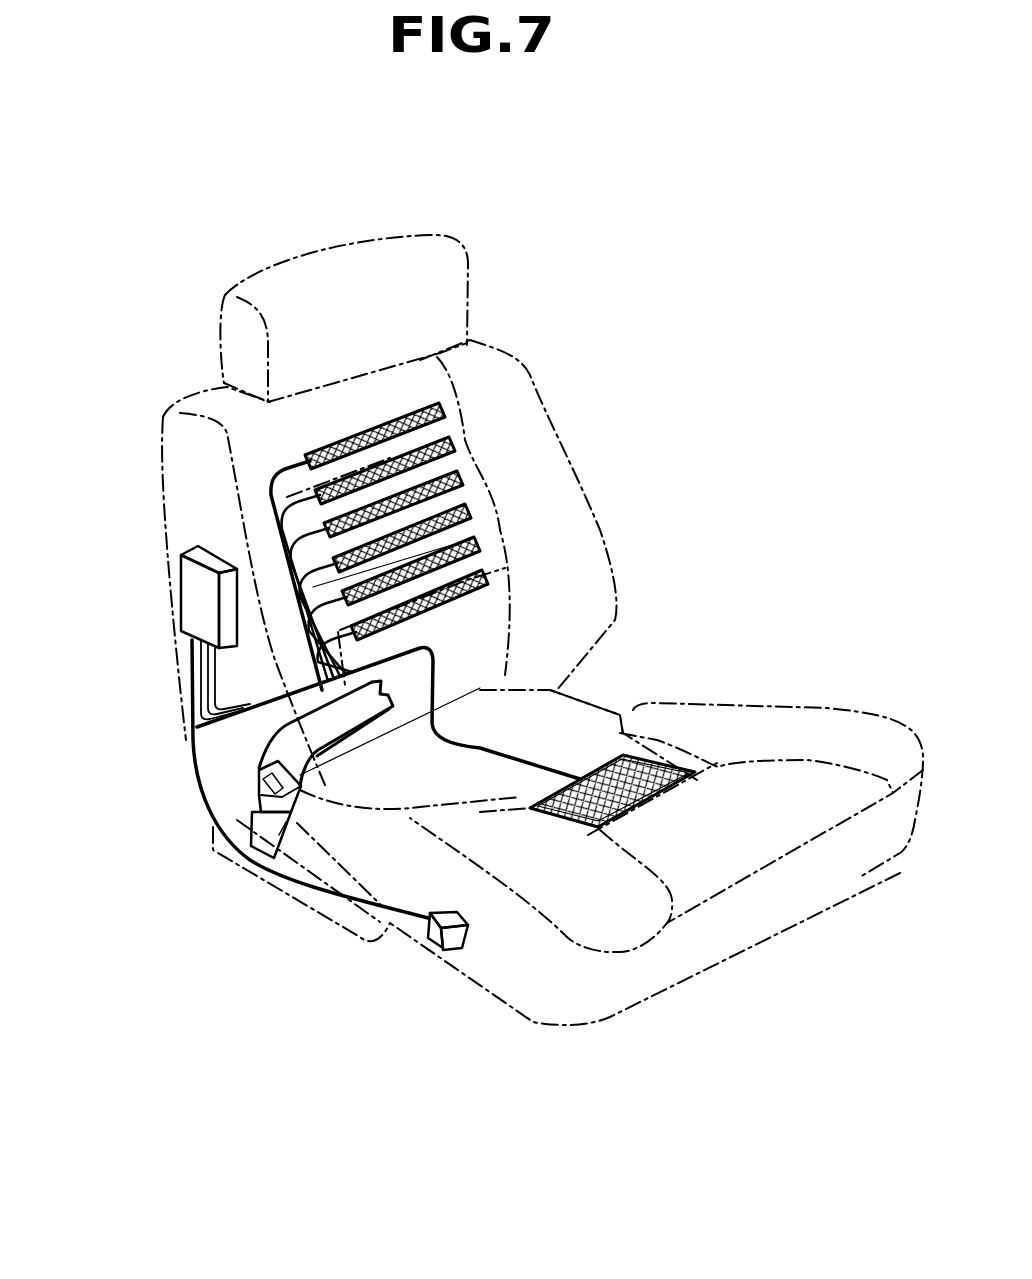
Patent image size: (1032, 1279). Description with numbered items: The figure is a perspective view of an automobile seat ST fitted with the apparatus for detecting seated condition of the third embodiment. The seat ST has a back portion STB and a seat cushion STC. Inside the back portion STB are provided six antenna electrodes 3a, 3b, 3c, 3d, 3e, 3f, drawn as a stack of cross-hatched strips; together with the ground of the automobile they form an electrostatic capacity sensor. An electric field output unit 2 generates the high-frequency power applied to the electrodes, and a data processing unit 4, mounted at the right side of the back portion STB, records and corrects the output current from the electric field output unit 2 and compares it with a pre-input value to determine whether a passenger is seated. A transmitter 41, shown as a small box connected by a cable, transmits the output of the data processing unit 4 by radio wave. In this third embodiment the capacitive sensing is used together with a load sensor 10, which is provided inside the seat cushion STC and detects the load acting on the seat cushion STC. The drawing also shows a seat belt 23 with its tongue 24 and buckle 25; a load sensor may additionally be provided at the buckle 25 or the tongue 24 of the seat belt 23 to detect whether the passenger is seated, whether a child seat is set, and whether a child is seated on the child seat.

The seat ST is at (174, 291).
The back portion STB is at (163, 493).
The seat cushion STC is at (823, 733).
The electric field output unit 2 is at (476, 298).
The antenna electrode 3a is at (444, 404).
The antenna electrode 3b is at (454, 438).
The antenna electrode 3c is at (462, 472).
The antenna electrode 3d is at (470, 505).
The antenna electrode 3e is at (479, 538).
The antenna electrode 3f is at (487, 571).
The data processing unit 4 is at (192, 612).
The load sensor 10 is at (637, 757).
The seat belt 23 is at (290, 753).
The tongue 24 is at (259, 787).
The buckle 25 is at (255, 814).
The transmitter 41 is at (433, 950).